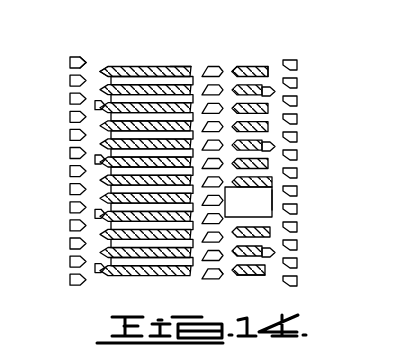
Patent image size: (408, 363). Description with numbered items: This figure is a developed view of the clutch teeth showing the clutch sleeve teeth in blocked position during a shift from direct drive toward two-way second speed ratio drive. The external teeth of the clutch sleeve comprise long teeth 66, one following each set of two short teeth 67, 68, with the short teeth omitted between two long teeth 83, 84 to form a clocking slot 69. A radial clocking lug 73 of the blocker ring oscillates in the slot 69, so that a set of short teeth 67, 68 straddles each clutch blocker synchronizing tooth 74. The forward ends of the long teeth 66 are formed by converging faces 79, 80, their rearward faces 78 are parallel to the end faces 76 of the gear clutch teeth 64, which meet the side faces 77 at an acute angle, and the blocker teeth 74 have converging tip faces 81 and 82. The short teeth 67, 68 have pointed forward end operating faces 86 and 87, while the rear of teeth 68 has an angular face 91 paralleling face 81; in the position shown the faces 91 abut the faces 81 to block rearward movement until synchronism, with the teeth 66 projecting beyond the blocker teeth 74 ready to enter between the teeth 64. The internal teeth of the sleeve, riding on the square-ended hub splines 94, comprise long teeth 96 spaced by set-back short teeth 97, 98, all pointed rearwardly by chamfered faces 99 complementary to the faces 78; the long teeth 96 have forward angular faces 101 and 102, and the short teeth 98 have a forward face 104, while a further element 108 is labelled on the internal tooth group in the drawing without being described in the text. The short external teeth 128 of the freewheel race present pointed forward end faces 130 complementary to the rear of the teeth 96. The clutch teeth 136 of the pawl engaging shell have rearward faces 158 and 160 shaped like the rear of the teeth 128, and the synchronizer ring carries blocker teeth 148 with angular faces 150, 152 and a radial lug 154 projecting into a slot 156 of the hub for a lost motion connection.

The clutch teeth 64 is at (297, 158).
The long teeth 66 is at (244, 68).
The short teeth 67 is at (240, 275).
The short teeth 68 is at (276, 251).
The clocking slot 69 is at (283, 225).
The clocking lug 73 is at (262, 209).
The clutch blocker synchronizing teeth 74 is at (276, 95).
The end faces 76 is at (292, 70).
The side faces 77 is at (276, 149).
The faces 78 is at (270, 64).
The converging face 79 is at (226, 72).
The converging face 80 is at (233, 70).
The face 81 is at (278, 134).
The face 82 is at (297, 138).
The long tooth 83 is at (270, 232).
The long tooth 84 is at (272, 199).
The end operating face 86 is at (224, 270).
The end operating face 87 is at (232, 272).
The angular face 91 is at (282, 108).
The external splines 94 is at (143, 80).
The long teeth 96 is at (136, 68).
The short teeth 97 is at (163, 92).
The short teeth 98 is at (177, 70).
The chamfered faces 99 is at (191, 272).
The angular face 101 is at (99, 67).
The angular face 102 is at (98, 73).
The face 104 is at (95, 267).
The conductive layer 108 is at (100, 250).
The short external teeth 128 is at (204, 280).
The end faces 130 is at (196, 266).
The clutch teeth 136 is at (66, 63).
The blocker teeth 148 is at (96, 159).
The angular face 150 is at (110, 153).
The angular face 152 is at (111, 171).
The lug 154 is at (112, 190).
The slots 156 is at (110, 183).
The face 158 is at (86, 57).
The face 160 is at (93, 62).